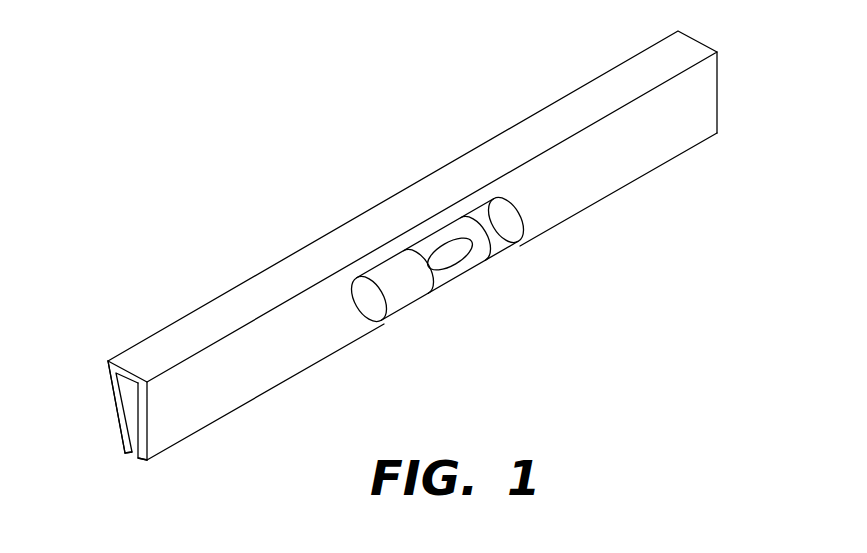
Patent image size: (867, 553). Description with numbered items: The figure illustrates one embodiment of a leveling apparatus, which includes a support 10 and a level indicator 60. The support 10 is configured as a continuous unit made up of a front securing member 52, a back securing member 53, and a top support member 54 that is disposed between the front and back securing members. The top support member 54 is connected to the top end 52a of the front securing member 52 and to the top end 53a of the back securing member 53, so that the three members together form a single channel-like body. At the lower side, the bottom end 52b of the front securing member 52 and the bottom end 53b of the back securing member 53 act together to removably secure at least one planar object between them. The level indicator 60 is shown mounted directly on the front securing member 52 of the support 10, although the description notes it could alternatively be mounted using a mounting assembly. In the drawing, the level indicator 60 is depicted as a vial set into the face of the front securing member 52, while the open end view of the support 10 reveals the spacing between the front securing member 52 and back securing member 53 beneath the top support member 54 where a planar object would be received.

The support 10 is at (115, 123).
The front securing member 52 is at (587, 197).
The top end of front securing member 52a is at (722, 55).
The bottom end of front securing member 52b is at (140, 459).
The back securing member 53 is at (117, 425).
The top end of back securing member 53a is at (110, 379).
The bottom end of back securing member 53b is at (128, 454).
The top support member 54 is at (510, 138).
The level indicator 60 is at (408, 296).